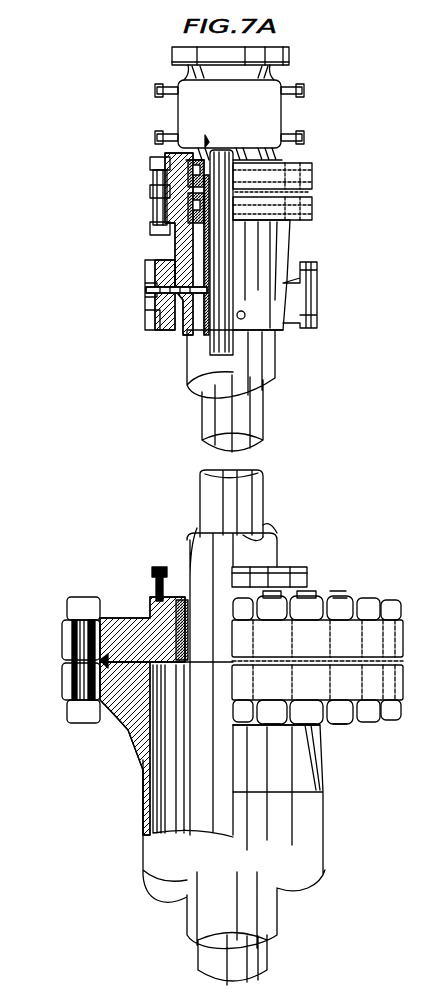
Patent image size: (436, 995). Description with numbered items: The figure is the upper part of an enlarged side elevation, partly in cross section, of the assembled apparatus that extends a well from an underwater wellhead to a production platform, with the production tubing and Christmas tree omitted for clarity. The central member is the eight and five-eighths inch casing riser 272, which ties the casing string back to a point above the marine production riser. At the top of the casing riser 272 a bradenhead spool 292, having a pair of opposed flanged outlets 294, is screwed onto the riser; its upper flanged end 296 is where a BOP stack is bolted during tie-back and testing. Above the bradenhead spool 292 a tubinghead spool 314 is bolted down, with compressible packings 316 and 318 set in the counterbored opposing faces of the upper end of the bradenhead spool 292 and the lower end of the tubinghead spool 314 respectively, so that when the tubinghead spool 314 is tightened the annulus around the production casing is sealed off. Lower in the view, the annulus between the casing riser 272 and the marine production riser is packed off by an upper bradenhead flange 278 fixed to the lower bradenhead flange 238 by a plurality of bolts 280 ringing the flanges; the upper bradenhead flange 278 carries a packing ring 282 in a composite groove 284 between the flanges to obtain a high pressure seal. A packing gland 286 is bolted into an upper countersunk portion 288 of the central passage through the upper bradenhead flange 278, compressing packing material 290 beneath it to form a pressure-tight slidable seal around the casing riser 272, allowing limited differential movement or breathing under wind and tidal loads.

The tubinghead spool 314 is at (247, 121).
The compressible packing 318 is at (165, 157).
The compressible packing 316 is at (180, 195).
The upper flanged end 296 is at (146, 220).
The bradenhead spool 292 is at (288, 243).
The flanged outlets 294 is at (147, 320).
The casing riser 272 is at (270, 357).
The packing material 290 is at (215, 493).
The packing gland 286 is at (177, 572).
The packing ring 282 is at (103, 616).
The upper countersunk portion 288 is at (150, 630).
The bolts 280 is at (66, 612).
The upper bradenhead flange 278 is at (62, 637).
The lower bradenhead flange 238 is at (62, 680).
The composite groove 284 is at (105, 668).